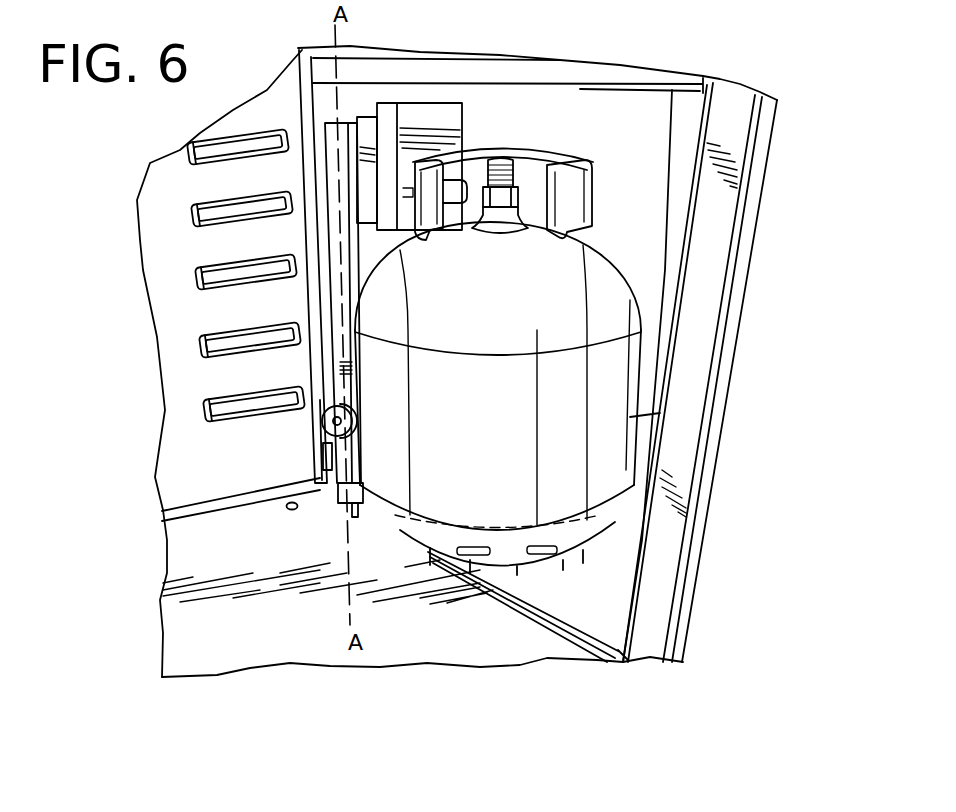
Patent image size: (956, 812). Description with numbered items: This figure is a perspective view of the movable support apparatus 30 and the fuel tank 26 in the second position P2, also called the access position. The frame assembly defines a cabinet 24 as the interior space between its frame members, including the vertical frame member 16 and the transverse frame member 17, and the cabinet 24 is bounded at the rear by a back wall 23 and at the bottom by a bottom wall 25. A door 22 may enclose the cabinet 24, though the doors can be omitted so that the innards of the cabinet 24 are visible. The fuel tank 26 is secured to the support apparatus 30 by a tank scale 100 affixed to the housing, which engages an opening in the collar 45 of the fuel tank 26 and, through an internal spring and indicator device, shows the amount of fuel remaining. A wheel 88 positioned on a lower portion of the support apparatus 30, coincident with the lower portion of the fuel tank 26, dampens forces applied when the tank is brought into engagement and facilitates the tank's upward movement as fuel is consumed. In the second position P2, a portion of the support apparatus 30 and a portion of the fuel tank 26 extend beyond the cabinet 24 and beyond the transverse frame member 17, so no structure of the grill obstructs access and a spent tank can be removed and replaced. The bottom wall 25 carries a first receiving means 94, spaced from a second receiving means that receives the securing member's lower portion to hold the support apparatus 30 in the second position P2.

The vertical frame member 16 is at (303, 92).
The transverse frame member 17 is at (548, 70).
The door 22 is at (612, 108).
The back wall 23 is at (170, 252).
The cabinet 24 is at (205, 619).
The bottom wall 25 is at (415, 652).
The fuel tank 26 is at (598, 285).
The support apparatus 30 is at (333, 163).
The collar 45 is at (570, 188).
The wheel 88 is at (323, 433).
The first receiving means 94 is at (287, 511).
The tank scale 100 is at (443, 122).
The second position P2 is at (780, 331).